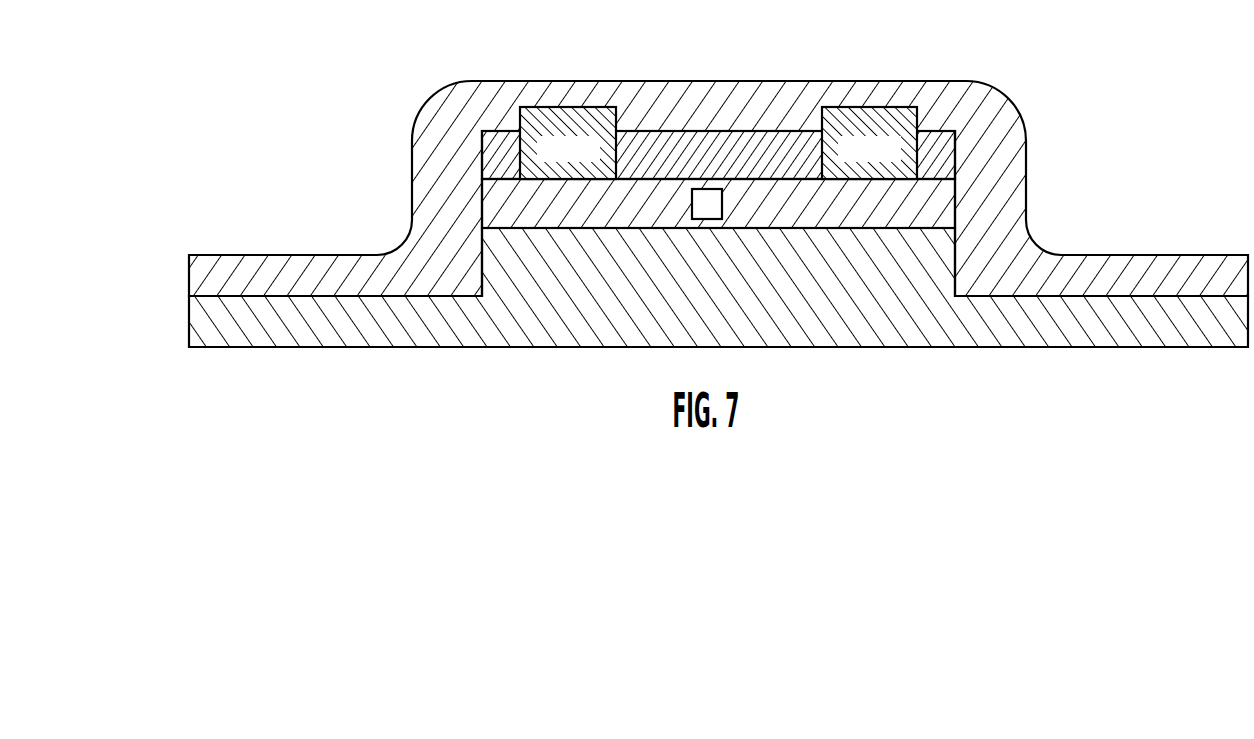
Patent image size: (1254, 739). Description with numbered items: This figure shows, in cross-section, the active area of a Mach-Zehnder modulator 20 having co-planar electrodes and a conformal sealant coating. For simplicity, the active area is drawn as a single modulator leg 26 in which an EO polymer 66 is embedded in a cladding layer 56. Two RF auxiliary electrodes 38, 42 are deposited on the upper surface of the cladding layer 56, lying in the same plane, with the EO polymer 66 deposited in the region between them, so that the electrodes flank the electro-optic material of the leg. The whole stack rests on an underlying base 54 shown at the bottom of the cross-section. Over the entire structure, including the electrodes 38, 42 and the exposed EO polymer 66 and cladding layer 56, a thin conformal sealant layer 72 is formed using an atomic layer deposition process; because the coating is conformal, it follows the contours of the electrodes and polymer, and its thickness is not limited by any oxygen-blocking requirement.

The Mach-Zehnder modulator 20 is at (718, 210).
The modulator leg 26 is at (706, 189).
The RF auxiliary electrode 38 is at (872, 112).
The RF auxiliary electrode 42 is at (563, 112).
The substrate 54 is at (1120, 336).
The cladding layer 56 is at (945, 210).
The EO polymer 66 is at (648, 145).
The conformal sealant layer 72 is at (1000, 106).